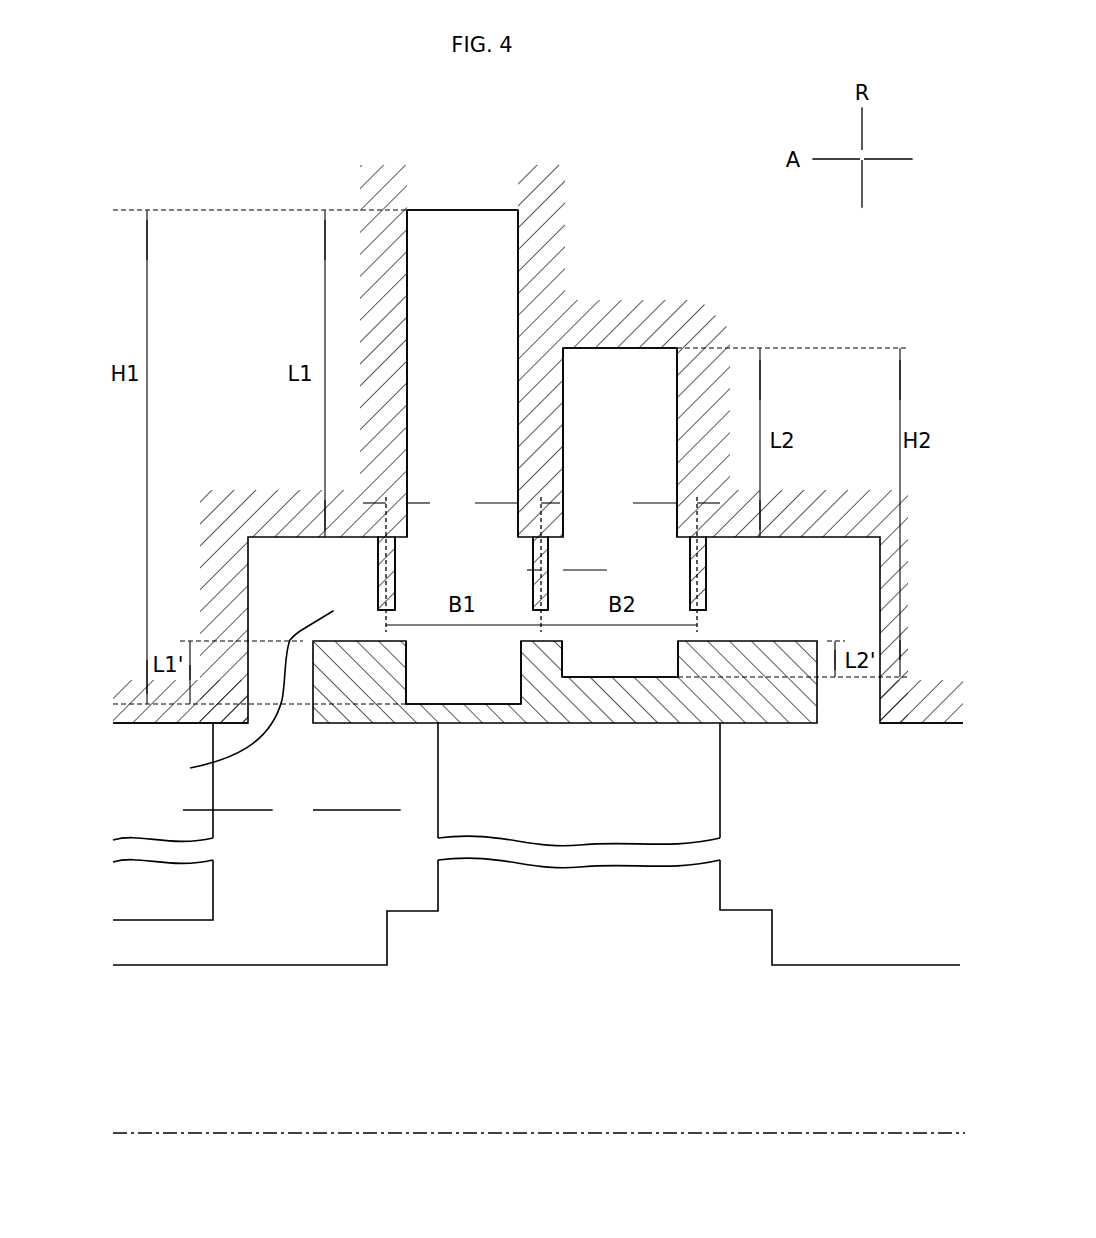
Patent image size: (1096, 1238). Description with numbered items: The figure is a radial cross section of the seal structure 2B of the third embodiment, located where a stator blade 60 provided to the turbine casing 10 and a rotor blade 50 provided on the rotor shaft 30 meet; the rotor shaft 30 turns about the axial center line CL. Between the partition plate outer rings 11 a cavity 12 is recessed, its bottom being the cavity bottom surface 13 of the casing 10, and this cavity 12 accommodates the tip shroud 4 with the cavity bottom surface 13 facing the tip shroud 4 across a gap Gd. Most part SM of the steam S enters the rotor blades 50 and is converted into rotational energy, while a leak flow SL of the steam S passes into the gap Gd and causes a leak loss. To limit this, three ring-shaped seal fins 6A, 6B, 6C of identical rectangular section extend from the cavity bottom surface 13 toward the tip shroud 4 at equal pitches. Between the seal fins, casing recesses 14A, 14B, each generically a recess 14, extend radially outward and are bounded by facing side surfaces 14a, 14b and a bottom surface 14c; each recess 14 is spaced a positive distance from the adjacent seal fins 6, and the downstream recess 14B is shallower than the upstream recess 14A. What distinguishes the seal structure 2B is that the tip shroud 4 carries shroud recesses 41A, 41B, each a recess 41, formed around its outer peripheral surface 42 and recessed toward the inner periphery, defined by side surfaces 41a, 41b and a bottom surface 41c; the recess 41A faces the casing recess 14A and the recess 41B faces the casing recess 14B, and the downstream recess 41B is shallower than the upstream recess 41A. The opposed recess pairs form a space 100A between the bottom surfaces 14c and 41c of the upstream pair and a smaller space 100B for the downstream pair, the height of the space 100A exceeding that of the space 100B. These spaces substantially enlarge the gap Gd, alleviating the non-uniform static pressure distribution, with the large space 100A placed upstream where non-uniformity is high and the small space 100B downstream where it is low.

The seal structure 2B is at (318, 178).
The turbine casing 10 is at (820, 259).
The casing recess 14 is at (542, 373).
The casing recess 14A is at (484, 393).
The casing recess 14B is at (613, 500).
The side surface 14a is at (408, 281).
The side surface 14b is at (517, 307).
The bottom surface 14c is at (466, 212).
The space 100A is at (436, 534).
The space 100B is at (605, 534).
The seal fin 6 is at (514, 564).
The seal fin 6A is at (378, 574).
The seal fin 6B is at (533, 574).
The seal fin 6C is at (690, 574).
The gap Gd is at (727, 576).
The outer peripheral surface 42 is at (733, 640).
The tip shroud 4 is at (765, 640).
The cavity bottom surface 13 is at (838, 540).
The shroud recess 41 is at (565, 703).
The shroud recess 41A is at (424, 665).
The shroud recess 41B is at (580, 665).
The side surface 41a is at (412, 704).
The side surface 41b is at (516, 706).
The bottom surface 41c is at (461, 706).
The partition plate outer ring 11 is at (128, 727).
The cavity 12 is at (847, 730).
The rotor blade 50 is at (720, 815).
The stator blade 60 is at (213, 890).
The rotor shaft 30 is at (873, 963).
The leak flow SL is at (298, 633).
The steam S is at (237, 813).
The most part of the steam SM is at (350, 813).
The axial center line CL is at (510, 1136).